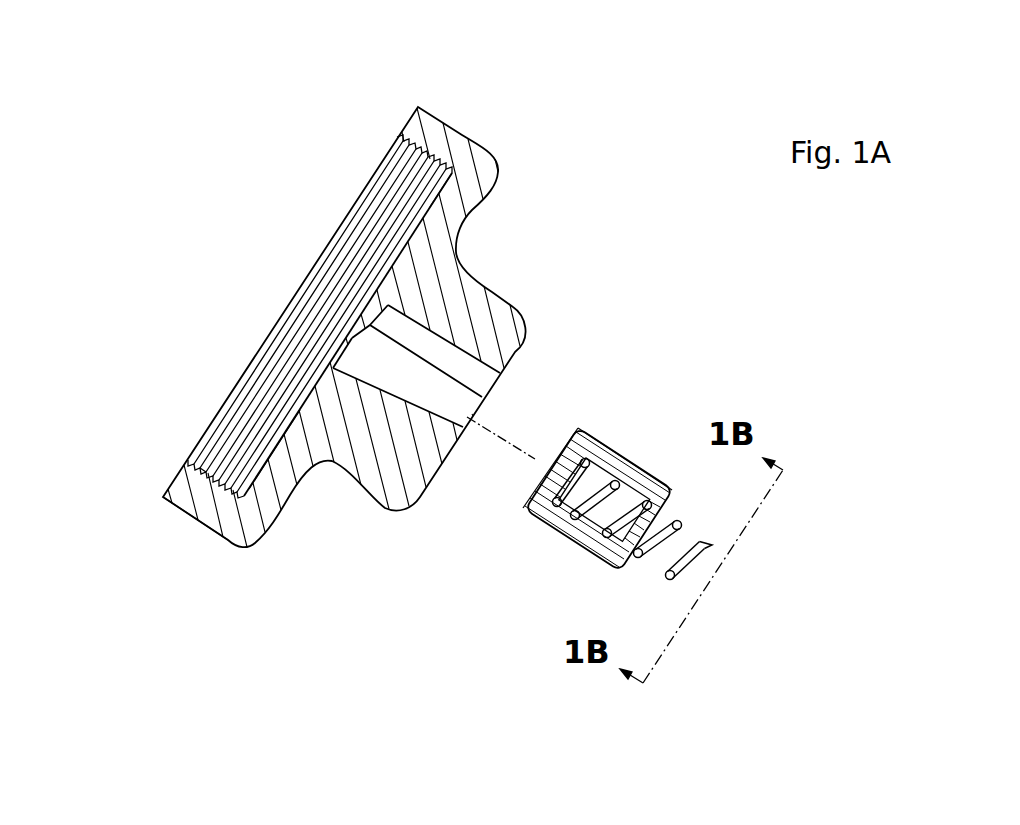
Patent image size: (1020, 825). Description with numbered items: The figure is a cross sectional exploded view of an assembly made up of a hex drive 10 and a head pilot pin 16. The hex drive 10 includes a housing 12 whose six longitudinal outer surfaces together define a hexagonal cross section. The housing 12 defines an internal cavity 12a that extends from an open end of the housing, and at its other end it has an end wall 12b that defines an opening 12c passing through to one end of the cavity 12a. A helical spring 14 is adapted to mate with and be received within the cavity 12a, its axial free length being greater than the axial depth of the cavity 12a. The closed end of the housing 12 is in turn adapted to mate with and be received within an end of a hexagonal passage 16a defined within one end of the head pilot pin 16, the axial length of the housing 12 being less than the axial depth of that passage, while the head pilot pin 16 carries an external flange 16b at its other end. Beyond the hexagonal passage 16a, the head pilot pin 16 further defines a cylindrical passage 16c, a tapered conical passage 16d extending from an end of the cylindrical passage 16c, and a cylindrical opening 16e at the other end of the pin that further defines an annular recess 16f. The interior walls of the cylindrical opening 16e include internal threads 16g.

The hex drive 10 is at (628, 499).
The housing 12 is at (557, 532).
The internal cavity 12a is at (633, 495).
The end wall 12b is at (562, 447).
The opening 12c is at (540, 462).
The helical spring 14 is at (715, 551).
The head pilot pin 16 is at (483, 92).
The hexagonal passage 16a is at (434, 382).
The external flange 16b is at (193, 493).
The cylindrical passage 16c is at (335, 363).
The tapered conical passage 16d is at (358, 283).
The cylindrical opening 16e is at (335, 235).
The annular recess 16f is at (257, 445).
The internal threads 16g is at (248, 397).